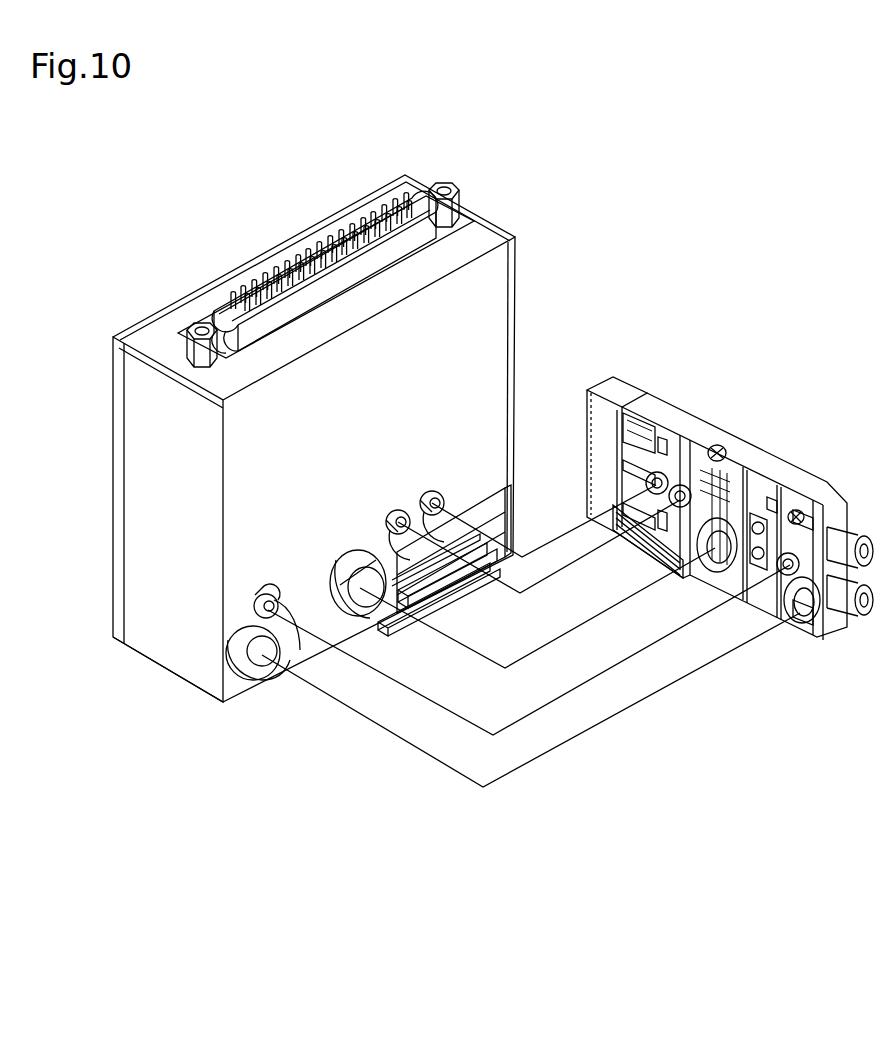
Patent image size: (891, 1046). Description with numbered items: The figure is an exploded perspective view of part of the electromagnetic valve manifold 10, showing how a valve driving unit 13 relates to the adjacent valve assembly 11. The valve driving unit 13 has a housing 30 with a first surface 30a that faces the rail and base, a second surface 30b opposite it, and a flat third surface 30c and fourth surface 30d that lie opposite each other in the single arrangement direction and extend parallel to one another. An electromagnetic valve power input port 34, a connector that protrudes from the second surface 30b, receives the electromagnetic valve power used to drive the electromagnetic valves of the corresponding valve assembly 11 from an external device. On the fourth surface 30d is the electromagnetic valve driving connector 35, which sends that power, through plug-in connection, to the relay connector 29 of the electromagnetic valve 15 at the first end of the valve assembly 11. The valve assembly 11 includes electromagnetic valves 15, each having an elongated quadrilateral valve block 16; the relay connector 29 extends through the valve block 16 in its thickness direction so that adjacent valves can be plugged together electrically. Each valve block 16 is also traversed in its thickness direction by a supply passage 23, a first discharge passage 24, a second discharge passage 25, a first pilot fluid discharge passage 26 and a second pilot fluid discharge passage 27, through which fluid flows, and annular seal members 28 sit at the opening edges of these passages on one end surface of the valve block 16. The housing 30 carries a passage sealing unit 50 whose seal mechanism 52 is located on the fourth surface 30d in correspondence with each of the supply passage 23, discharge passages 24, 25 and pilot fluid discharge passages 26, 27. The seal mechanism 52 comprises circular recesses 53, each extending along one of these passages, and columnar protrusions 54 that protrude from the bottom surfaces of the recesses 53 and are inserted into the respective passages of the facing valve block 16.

The electromagnetic valve manifold 10 is at (676, 300).
The valve assembly 11 is at (750, 407).
The valve driving unit 13 is at (130, 324).
The electromagnetic valve 15 is at (606, 372).
The valve block 16 is at (676, 416).
The supply passage 23 is at (783, 578).
The first discharge passage 24 is at (800, 625).
The second discharge passage 25 is at (718, 568).
The first pilot fluid discharge passage 26 is at (670, 560).
The second pilot fluid discharge passage 27 is at (644, 472).
The annular seal member 28 is at (726, 470).
The relay connector 29 is at (618, 538).
The housing 30 is at (504, 236).
The first surface 30a is at (178, 683).
The second surface 30b is at (180, 322).
The third surface 30c is at (112, 465).
The fourth surface 30d is at (420, 360).
The electromagnetic valve power input port 34 is at (330, 272).
The electromagnetic valve driving connector 35 is at (428, 596).
The passage sealing unit 50 is at (322, 543).
The seal mechanism 52 is at (428, 452).
The circular recess 53 is at (348, 560).
The columnar protrusion 54 is at (275, 650).